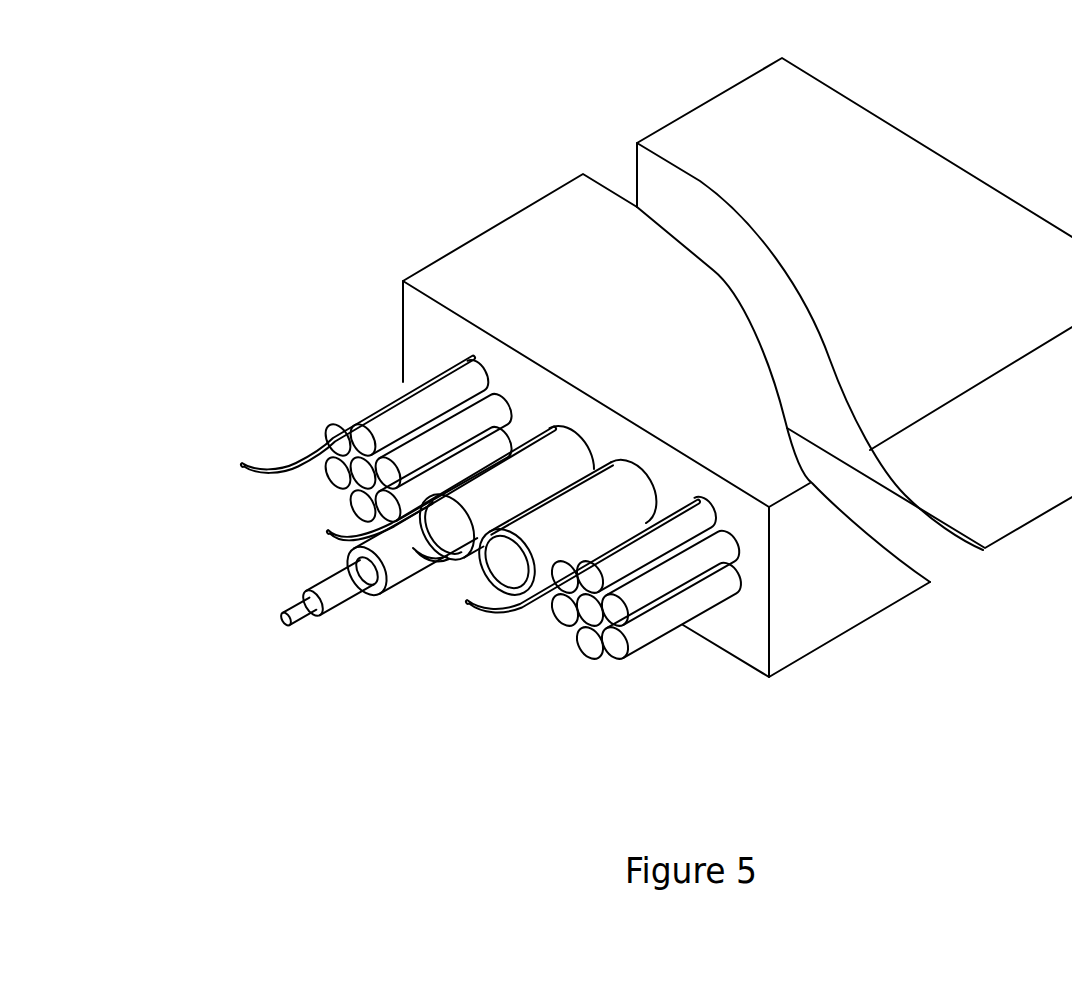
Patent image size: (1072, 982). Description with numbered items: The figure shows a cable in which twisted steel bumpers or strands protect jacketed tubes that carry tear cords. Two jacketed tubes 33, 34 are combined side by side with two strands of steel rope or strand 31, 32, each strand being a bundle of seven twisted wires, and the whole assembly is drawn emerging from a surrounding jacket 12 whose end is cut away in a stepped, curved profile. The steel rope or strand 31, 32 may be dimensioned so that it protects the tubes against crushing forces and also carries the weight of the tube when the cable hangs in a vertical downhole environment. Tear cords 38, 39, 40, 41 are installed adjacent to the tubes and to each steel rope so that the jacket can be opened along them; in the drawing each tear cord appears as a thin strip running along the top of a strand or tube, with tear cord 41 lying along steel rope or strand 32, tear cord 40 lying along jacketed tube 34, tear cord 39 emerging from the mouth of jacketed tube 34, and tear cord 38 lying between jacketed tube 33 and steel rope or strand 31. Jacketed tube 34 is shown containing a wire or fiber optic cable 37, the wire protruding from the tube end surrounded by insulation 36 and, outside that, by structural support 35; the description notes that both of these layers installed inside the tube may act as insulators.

The jacket 12 is at (837, 615).
The steel rope or strand 31 is at (560, 646).
The steel rope or strand 32 is at (320, 501).
The jacketed tube 33 is at (590, 534).
The jacketed tube 34 is at (517, 501).
The structural support 35 is at (390, 603).
The insulation 36 is at (337, 611).
The center conductor 37 is at (283, 619).
The tear cord 38 is at (497, 608).
The tear cord 39 is at (441, 556).
The tear cord 40 is at (333, 538).
The tear cord 41 is at (262, 473).